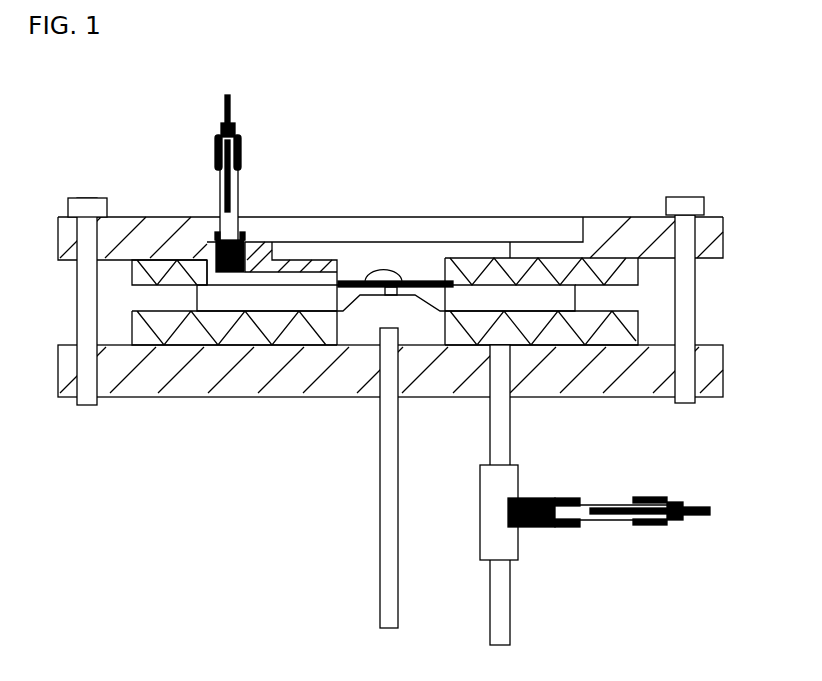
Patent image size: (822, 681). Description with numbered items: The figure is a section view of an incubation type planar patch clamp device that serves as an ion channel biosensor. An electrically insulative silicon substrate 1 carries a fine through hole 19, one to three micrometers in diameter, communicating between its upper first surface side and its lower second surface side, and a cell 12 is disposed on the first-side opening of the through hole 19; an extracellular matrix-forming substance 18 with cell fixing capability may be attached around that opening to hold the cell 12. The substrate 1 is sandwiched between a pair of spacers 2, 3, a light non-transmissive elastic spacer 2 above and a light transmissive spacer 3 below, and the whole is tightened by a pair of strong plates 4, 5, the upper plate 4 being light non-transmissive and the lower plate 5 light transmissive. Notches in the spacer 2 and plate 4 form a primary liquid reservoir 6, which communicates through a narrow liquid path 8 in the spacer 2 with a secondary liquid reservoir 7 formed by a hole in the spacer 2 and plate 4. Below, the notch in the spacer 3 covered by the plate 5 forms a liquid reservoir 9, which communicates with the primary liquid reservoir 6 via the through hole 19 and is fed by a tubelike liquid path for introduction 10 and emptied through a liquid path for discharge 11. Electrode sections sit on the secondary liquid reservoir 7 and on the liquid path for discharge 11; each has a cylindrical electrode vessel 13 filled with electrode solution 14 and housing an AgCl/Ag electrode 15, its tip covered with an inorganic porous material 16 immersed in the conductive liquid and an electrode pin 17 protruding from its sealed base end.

The substrate 1 is at (287, 294).
The spacer 2 is at (472, 290).
The spacer 3 is at (537, 330).
The plate 4 is at (628, 240).
The plate 5 is at (235, 378).
The primary liquid reservoir 6 is at (421, 272).
The secondary liquid reservoir 7 is at (199, 243).
The narrow liquid path 8 is at (276, 278).
The liquid reservoir 9 is at (372, 322).
The liquid path for introduction 10 is at (390, 552).
The liquid path for discharge 11 is at (503, 613).
The cell 12 is at (374, 270).
The electrode vessel 13 is at (238, 217).
The electrode solution 14 is at (220, 238).
The AgCl/Ag electrode 15 is at (240, 160).
The inorganic porous material 16 is at (208, 255).
The electrode pin 17 is at (228, 95).
The extracellular matrix-forming substance 18 is at (329, 318).
The through hole 19 is at (390, 282).